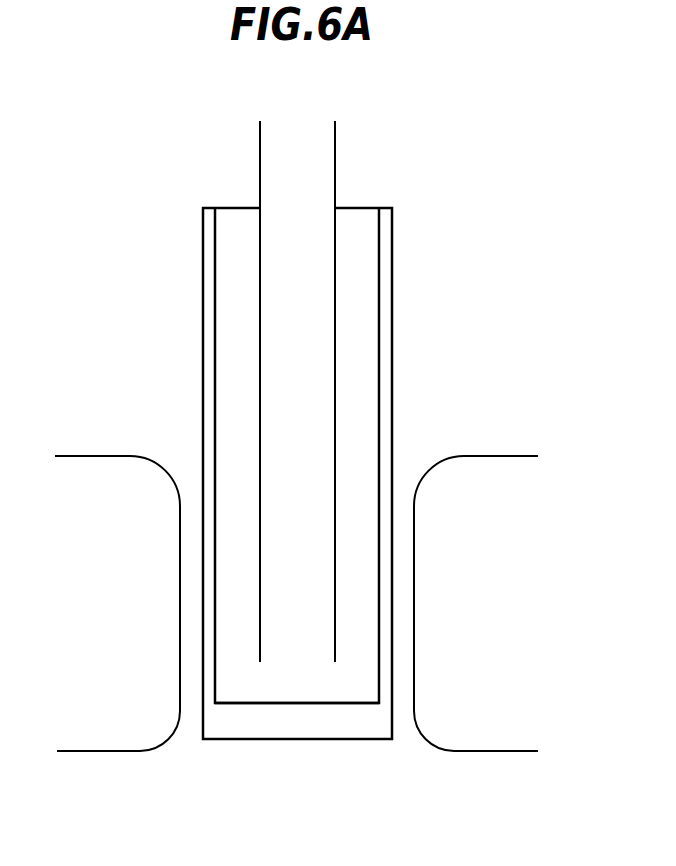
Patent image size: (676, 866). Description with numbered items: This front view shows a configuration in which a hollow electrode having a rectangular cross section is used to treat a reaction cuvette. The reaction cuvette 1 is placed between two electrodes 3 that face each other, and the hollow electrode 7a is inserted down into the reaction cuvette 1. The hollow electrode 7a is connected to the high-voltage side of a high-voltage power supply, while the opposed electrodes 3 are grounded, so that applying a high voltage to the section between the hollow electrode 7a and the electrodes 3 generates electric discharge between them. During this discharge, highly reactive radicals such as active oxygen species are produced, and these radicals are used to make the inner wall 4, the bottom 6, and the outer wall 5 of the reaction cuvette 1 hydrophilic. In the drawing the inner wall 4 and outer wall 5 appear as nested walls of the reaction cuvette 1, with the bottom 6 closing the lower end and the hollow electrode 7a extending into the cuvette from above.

The reaction cuvette 1 is at (392, 485).
The electrodes 3 is at (103, 752).
The inner wall 4 is at (216, 526).
The outer wall 5 is at (203, 500).
The bottom 6 is at (245, 703).
The hollow electrode having a rectangular cross section 7a is at (336, 133).